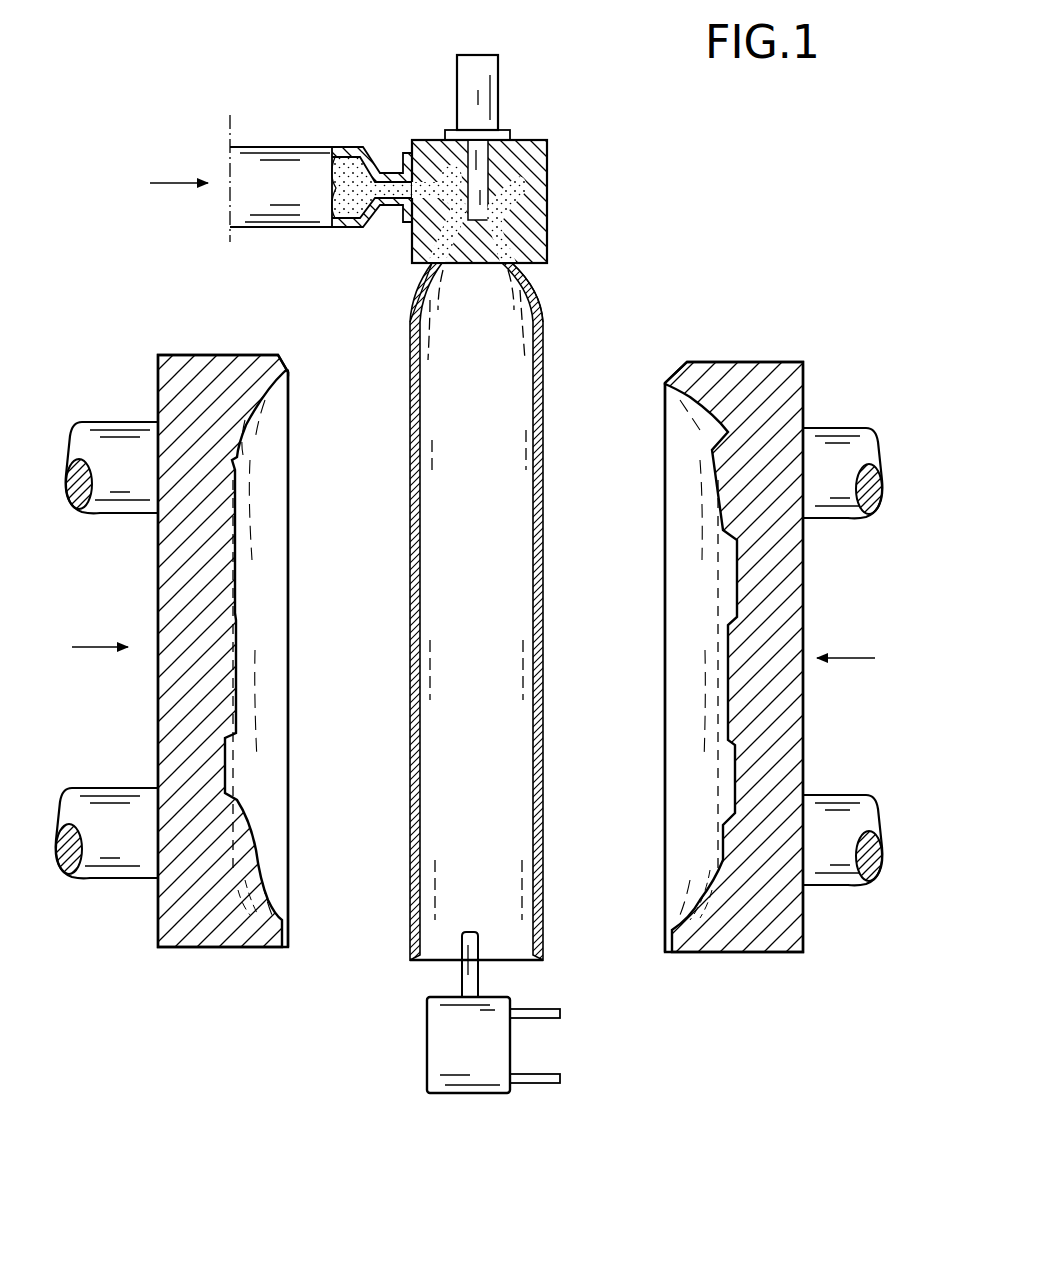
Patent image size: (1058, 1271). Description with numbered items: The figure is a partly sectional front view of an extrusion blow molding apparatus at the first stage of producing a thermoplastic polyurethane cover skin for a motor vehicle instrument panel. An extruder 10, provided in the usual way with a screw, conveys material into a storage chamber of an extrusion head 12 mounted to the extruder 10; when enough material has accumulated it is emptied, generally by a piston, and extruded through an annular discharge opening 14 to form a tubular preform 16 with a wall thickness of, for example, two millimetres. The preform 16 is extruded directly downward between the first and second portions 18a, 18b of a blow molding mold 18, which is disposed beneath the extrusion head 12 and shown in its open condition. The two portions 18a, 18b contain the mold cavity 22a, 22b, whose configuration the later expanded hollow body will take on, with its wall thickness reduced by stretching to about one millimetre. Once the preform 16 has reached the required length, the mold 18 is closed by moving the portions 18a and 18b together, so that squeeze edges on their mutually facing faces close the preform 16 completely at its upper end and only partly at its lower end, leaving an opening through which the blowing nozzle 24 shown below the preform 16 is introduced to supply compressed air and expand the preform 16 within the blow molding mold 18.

The extruder 10 is at (277, 165).
The extrusion head 12 is at (523, 217).
The annular discharge opening 14 is at (533, 268).
The tubular preform 16 is at (543, 708).
The blow molding mold 18 is at (469, 645).
The first portion of blow molding mold 18a is at (220, 694).
The second portion of blow molding mold 18b is at (731, 697).
The mold cavity 22a is at (263, 591).
The mold cavity 22b is at (688, 582).
The blowing nozzle 24 is at (462, 970).